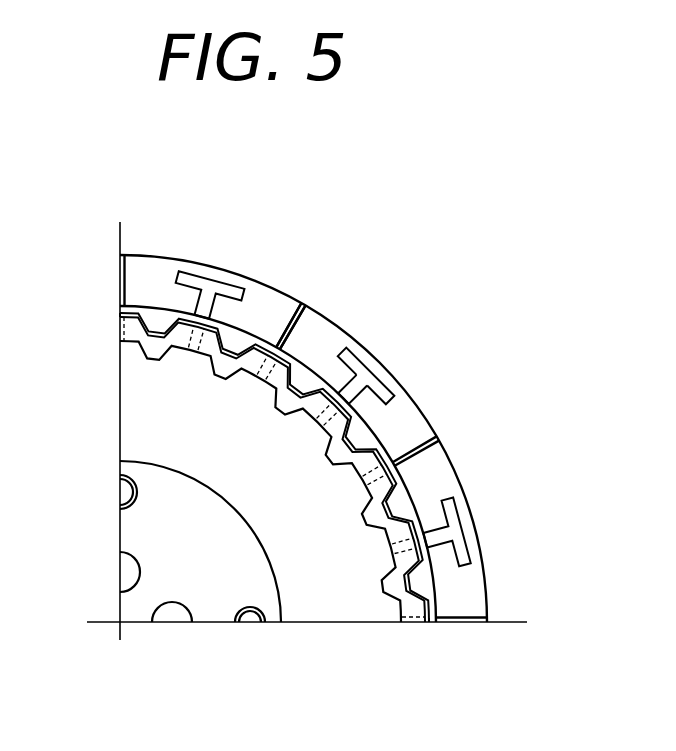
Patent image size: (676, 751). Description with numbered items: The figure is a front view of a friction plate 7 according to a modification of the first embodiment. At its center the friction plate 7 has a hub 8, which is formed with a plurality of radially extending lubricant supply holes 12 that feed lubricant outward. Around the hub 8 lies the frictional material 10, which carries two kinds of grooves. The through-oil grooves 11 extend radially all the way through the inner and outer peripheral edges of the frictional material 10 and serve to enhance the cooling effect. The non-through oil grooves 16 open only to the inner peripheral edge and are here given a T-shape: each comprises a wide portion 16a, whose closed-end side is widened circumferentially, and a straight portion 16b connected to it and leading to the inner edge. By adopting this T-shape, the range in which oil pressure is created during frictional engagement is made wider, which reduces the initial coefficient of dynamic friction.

The friction plate 7 is at (185, 229).
The hub 8 is at (348, 607).
The frictional material 10 is at (473, 583).
The through-oil groove 11 is at (300, 316).
The lubricant supply hole 12 is at (375, 480).
The non-through oil groove 16 is at (403, 328).
The wide portion 16a is at (367, 368).
The straight portion 16b is at (343, 350).